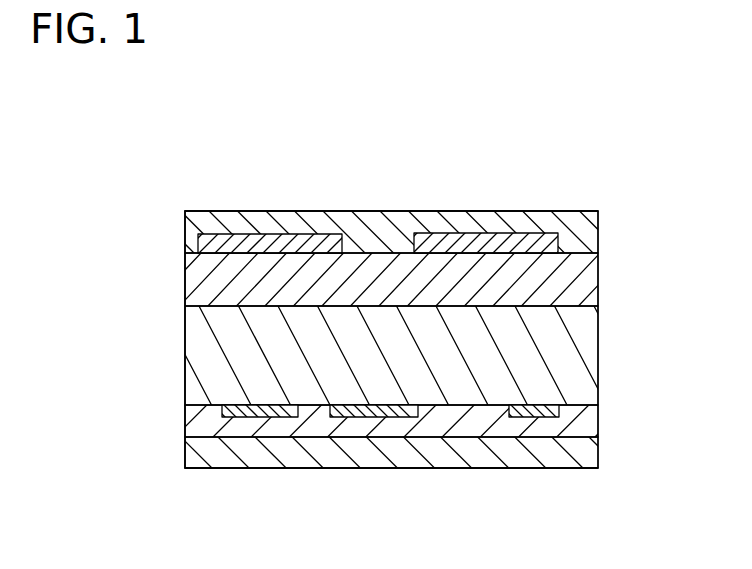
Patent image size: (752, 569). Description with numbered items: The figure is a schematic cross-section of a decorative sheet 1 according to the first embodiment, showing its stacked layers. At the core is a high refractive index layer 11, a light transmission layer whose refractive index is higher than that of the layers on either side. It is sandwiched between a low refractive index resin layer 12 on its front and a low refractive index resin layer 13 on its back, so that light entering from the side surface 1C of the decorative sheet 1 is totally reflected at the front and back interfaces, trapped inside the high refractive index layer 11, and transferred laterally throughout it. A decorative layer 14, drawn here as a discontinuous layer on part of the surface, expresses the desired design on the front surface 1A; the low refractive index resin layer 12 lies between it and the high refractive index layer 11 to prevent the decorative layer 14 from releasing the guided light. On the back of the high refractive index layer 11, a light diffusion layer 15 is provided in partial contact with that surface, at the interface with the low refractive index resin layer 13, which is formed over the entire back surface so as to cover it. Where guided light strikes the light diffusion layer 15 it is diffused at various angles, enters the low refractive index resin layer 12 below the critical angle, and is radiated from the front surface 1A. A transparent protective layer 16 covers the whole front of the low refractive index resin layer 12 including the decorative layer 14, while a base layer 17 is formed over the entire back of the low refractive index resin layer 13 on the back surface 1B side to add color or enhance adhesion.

The decorative sheet 1 is at (386, 123).
The front surface 1A is at (403, 211).
The back surface 1B is at (310, 470).
The side surface 1C is at (185, 344).
The high refractive index layer 11 is at (587, 352).
The low refractive index resin layer 12 is at (585, 277).
The low refractive index resin layer 13 is at (588, 422).
The decorative layer 14 is at (262, 238).
The light diffusion layer 15 is at (244, 416).
The protective layer 16 is at (585, 235).
The base layer 17 is at (592, 449).